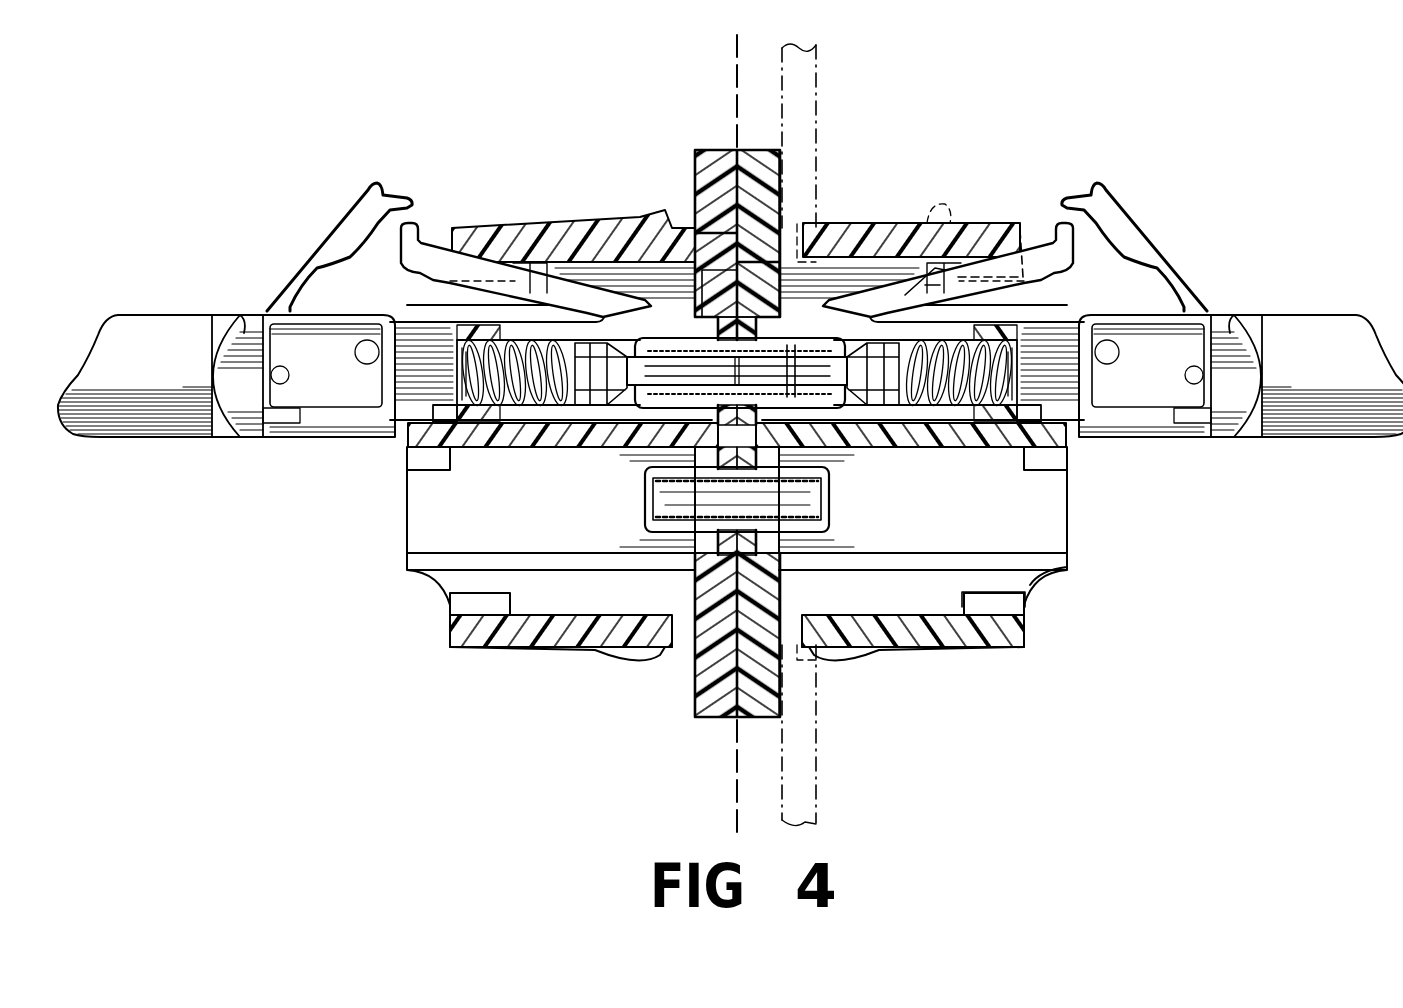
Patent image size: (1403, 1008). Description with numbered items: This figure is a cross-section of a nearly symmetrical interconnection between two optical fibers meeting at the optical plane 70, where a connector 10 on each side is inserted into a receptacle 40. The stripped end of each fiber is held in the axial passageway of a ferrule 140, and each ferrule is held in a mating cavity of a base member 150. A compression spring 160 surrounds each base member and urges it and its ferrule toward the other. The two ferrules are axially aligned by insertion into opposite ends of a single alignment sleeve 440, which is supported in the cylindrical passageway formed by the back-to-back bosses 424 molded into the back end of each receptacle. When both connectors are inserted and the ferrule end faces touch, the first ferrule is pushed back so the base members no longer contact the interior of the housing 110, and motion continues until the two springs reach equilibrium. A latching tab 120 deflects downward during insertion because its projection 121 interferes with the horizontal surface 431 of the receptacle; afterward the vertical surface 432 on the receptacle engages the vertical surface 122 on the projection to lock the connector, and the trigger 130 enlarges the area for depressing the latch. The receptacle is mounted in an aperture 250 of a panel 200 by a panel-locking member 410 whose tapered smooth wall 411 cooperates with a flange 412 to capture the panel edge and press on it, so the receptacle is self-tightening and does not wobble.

The connector 10 is at (350, 462).
The receptacle 40 is at (765, 570).
The optical plane 70 is at (736, 82).
The housing 110 is at (585, 420).
The latching tab 120 is at (948, 229).
The projection 121 is at (940, 262).
The vertical surface 122 is at (1003, 216).
The trigger 130 is at (1125, 218).
The ferrule 140 is at (784, 345).
The base member 150 is at (885, 402).
The compression spring 160 is at (950, 405).
The panel 200 is at (816, 92).
The aperture 250 is at (797, 222).
The panel-locking member 410 is at (640, 216).
The smooth wall 411 is at (690, 187).
The flange 412 is at (710, 408).
The boss 424 is at (680, 405).
The horizontal surface 431 is at (1047, 568).
The vertical surface 432 is at (945, 210).
The alignment sleeve 440 is at (815, 400).